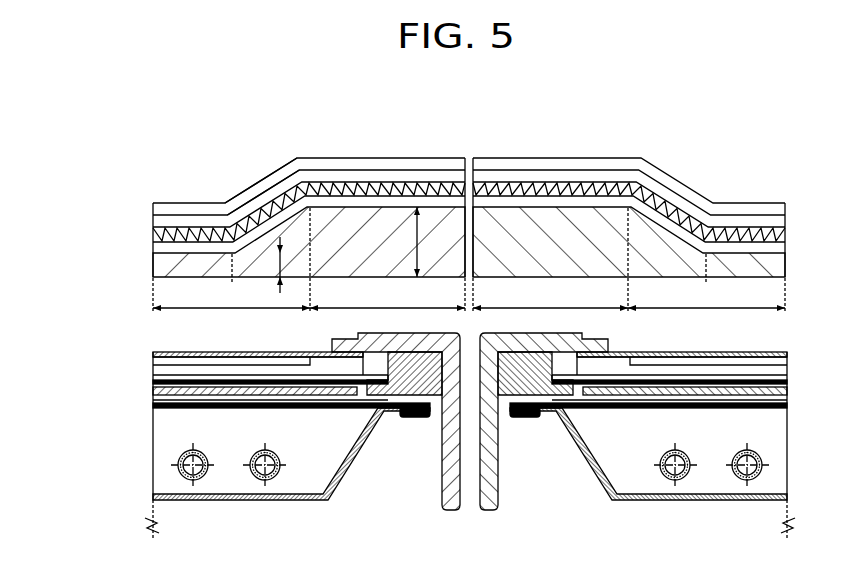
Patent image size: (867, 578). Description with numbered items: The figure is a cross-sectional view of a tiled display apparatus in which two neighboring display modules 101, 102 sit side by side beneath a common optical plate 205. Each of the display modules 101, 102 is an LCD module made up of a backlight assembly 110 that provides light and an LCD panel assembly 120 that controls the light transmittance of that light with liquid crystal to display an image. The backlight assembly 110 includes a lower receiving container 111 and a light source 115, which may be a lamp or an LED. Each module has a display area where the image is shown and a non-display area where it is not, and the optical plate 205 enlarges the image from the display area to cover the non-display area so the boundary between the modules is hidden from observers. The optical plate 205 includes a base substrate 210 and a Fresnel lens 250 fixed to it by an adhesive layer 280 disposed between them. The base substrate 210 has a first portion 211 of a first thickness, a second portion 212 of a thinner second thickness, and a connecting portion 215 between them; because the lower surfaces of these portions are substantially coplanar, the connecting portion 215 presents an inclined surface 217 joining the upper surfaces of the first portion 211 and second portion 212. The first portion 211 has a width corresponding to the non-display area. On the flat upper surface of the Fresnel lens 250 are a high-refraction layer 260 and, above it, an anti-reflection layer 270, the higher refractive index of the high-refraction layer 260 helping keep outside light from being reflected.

The optical plate 205 is at (84, 223).
The base substrate 210 is at (347, 112).
The first portion 211 is at (342, 228).
The second portion 212 is at (228, 224).
The connecting portion 215 is at (275, 192).
The inclined surface 217 is at (248, 203).
The Fresnel lens 250 is at (153, 235).
The high-refraction layer 260 is at (153, 221).
The anti-reflection layer 270 is at (153, 208).
The adhesive layer 280 is at (153, 247).
The display module 101 is at (84, 394).
The display module 102 is at (797, 427).
The backlight assembly 110 is at (150, 397).
The lower receiving container 111 is at (285, 500).
The light source 115 is at (204, 498).
The LCD panel assembly 120 is at (150, 353).